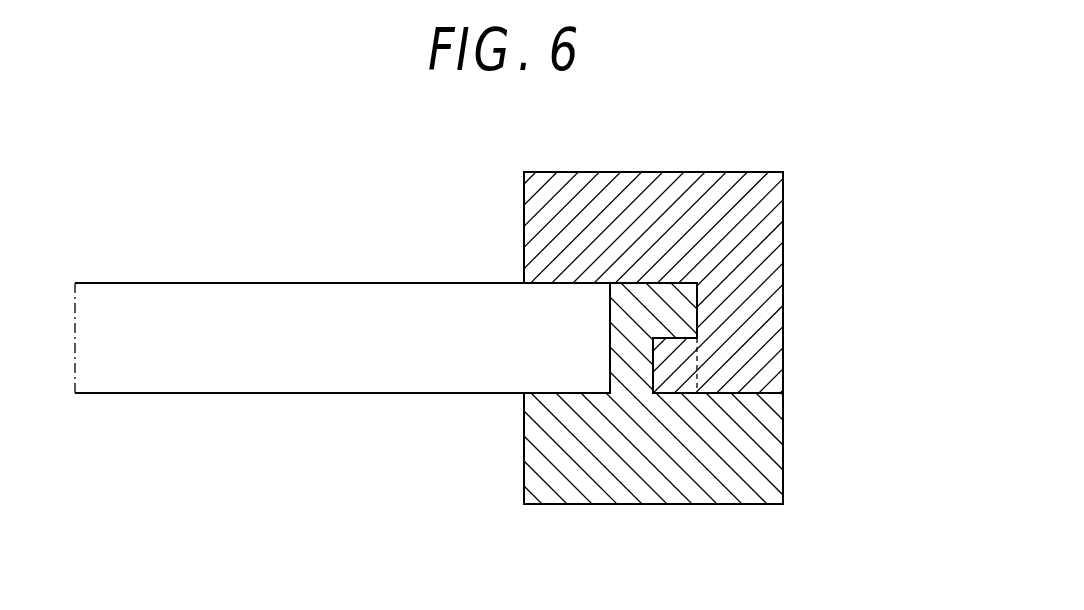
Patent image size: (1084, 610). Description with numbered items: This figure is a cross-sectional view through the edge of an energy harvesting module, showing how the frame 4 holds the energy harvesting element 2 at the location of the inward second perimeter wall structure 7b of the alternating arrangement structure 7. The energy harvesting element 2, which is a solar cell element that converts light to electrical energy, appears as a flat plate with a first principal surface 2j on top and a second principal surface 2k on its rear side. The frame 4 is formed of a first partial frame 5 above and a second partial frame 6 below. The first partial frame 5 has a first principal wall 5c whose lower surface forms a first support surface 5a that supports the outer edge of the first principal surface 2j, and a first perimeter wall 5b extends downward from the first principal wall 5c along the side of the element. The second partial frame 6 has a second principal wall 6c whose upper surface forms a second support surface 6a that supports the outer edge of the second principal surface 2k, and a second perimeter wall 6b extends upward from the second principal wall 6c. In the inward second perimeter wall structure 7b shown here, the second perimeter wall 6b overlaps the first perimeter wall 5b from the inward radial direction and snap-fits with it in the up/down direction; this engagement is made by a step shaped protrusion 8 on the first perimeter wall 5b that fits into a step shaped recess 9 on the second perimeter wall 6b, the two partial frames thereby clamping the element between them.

The energy harvesting element 2 is at (222, 283).
The first principal surface 2j is at (285, 283).
The second principal surface 2k is at (260, 393).
The frame 4 is at (605, 336).
The first partial frame 5 is at (712, 172).
The first support surface 5a is at (552, 283).
The first perimeter wall 5b is at (750, 312).
The first principal wall 5c is at (647, 222).
The second partial frame 6 is at (701, 505).
The second support surface 6a is at (556, 393).
The second perimeter wall 6b is at (624, 344).
The second principal wall 6c is at (647, 455).
The alternating arrangement structure 7 is at (854, 338).
The inward second perimeter wall structure 7b is at (798, 348).
The protrusion 8 is at (654, 366).
The recess 9 is at (655, 360).